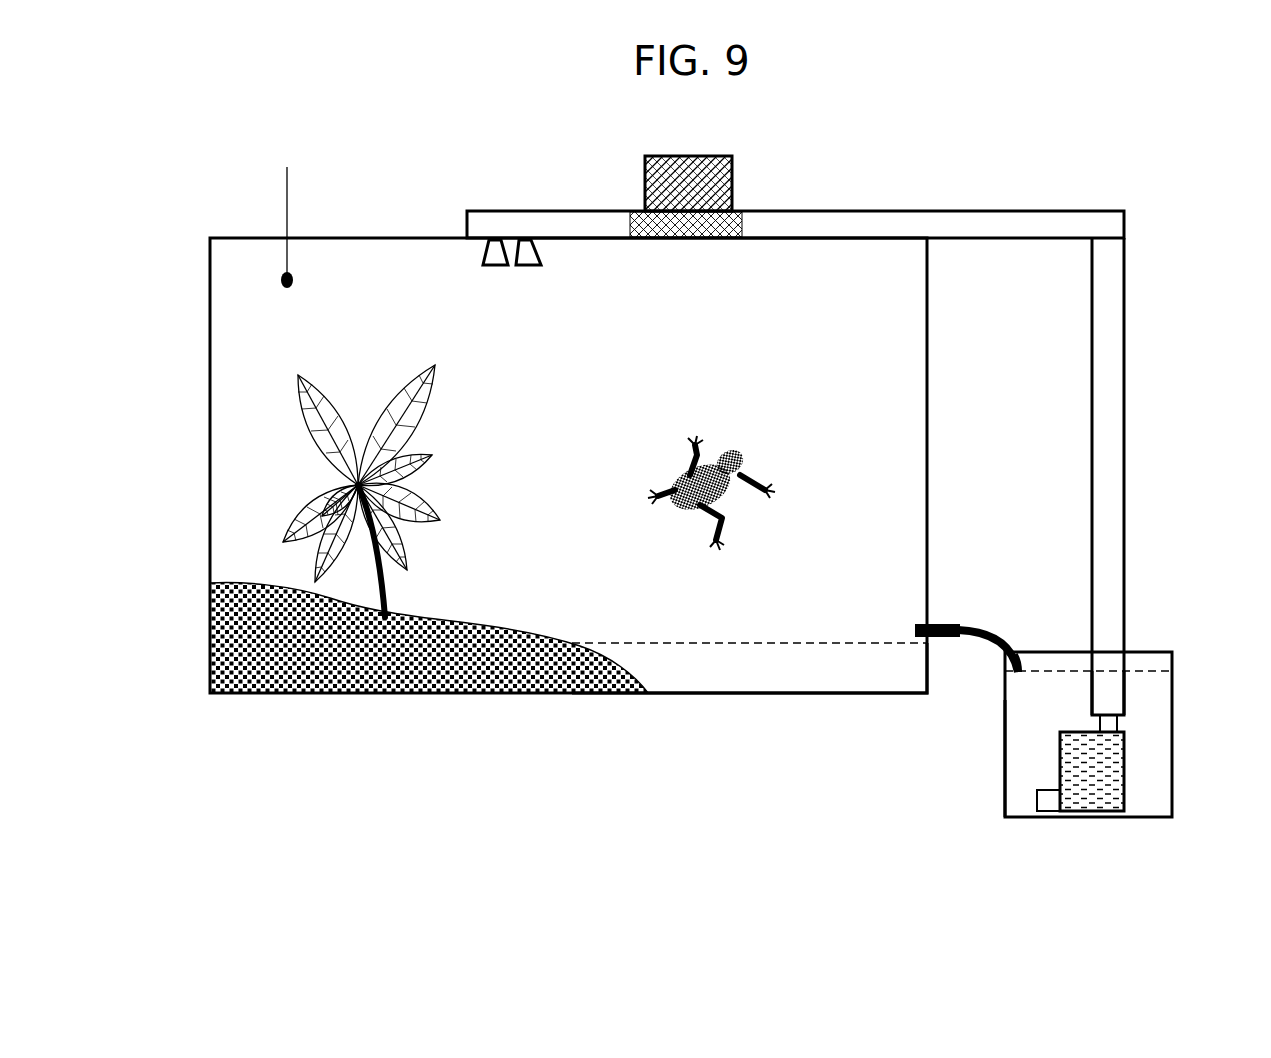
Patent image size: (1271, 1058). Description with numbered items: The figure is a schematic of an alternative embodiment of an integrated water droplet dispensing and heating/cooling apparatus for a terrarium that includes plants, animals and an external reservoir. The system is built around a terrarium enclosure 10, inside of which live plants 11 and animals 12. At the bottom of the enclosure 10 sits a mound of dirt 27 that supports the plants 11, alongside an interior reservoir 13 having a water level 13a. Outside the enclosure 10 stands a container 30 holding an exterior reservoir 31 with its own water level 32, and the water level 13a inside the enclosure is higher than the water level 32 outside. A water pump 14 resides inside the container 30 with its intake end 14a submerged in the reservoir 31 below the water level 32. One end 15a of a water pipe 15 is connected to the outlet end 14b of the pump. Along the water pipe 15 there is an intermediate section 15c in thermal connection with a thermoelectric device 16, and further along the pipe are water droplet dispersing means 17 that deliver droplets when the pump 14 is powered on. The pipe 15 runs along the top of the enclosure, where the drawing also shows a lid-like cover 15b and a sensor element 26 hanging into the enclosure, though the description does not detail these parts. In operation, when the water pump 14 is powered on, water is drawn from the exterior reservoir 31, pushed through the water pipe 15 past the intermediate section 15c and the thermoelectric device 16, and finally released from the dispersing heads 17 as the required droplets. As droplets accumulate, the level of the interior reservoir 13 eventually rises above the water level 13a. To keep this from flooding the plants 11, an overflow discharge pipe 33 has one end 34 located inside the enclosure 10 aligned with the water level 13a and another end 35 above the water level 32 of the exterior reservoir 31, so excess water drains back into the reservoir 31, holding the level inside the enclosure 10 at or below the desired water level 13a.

The terrarium enclosure 10 is at (363, 280).
The plants 11 is at (290, 425).
The animals 12 is at (730, 460).
The interior reservoir 13 is at (885, 668).
The water level 13a is at (782, 645).
The water pump 14 is at (1088, 785).
The intake end 14a is at (1048, 805).
The outlet end 14b is at (1115, 722).
The water pipe 15 is at (1100, 287).
The end of water pipe 15a is at (1107, 699).
The lid / cover 15b is at (478, 226).
The intermediate section 15c is at (723, 223).
The thermoelectric device 16 is at (648, 196).
The water droplet dispersing means 17 is at (508, 268).
The sensor 26 is at (306, 238).
The mound of dirt 27 is at (365, 668).
The container 30 is at (1000, 762).
The reservoir 31 is at (1035, 748).
The water level 32 is at (1158, 665).
The overflow discharge pipe 33 is at (963, 607).
The end of overflow discharge pipe 34 is at (910, 615).
The end of overflow discharge pipe 35 is at (1028, 660).